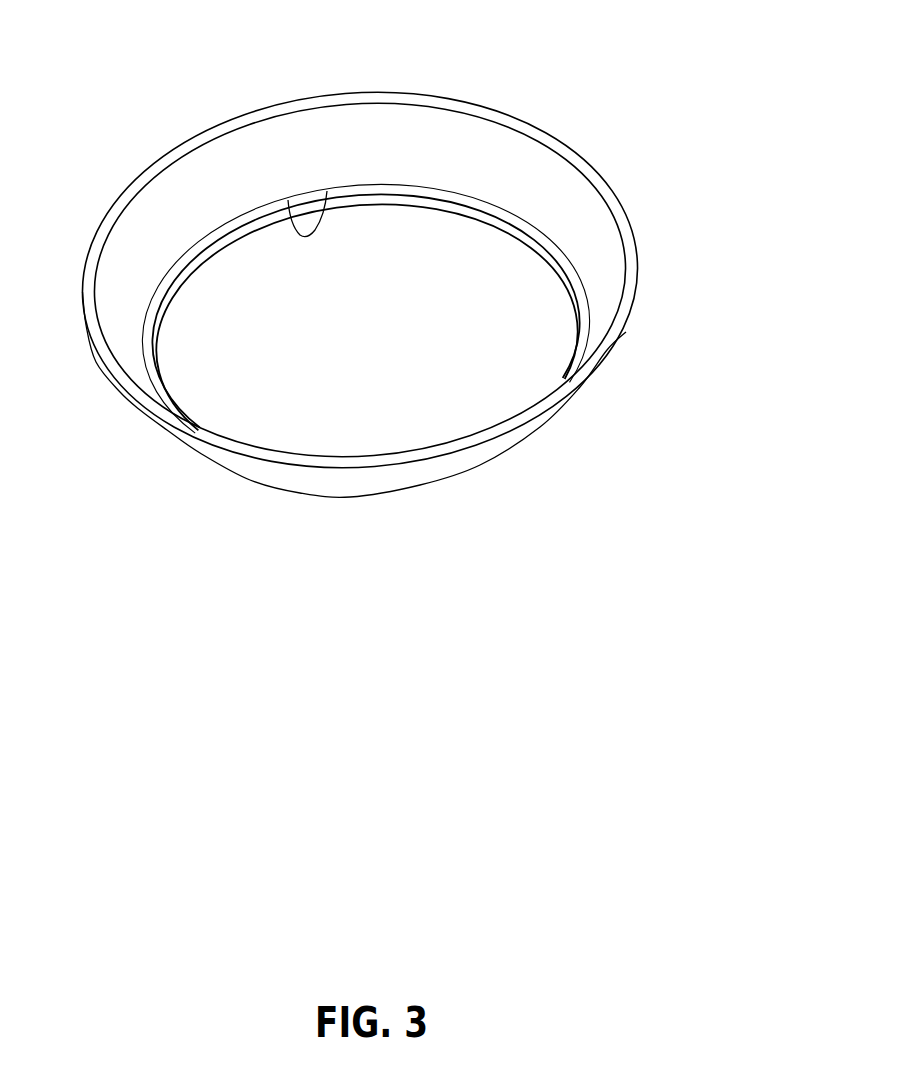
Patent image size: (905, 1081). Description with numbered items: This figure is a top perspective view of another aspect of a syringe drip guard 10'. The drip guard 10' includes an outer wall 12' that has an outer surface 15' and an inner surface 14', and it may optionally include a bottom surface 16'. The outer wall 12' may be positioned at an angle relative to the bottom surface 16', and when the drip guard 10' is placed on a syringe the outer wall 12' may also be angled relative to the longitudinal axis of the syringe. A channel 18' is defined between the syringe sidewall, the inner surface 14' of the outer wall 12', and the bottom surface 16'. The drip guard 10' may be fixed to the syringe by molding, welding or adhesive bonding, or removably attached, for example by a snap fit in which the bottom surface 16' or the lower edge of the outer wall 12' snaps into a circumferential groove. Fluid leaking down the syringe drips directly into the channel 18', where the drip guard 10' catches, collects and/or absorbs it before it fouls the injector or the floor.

The drip guard 10' is at (434, 314).
The outer wall 12' is at (383, 430).
The inner surface 14' is at (398, 280).
The outer surface 15' is at (373, 530).
The bottom surface 16' is at (308, 135).
The channel 18' is at (365, 233).